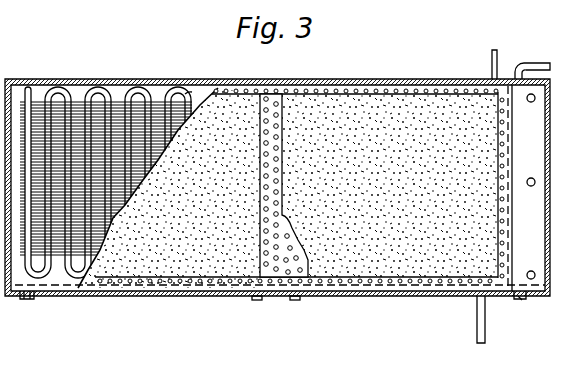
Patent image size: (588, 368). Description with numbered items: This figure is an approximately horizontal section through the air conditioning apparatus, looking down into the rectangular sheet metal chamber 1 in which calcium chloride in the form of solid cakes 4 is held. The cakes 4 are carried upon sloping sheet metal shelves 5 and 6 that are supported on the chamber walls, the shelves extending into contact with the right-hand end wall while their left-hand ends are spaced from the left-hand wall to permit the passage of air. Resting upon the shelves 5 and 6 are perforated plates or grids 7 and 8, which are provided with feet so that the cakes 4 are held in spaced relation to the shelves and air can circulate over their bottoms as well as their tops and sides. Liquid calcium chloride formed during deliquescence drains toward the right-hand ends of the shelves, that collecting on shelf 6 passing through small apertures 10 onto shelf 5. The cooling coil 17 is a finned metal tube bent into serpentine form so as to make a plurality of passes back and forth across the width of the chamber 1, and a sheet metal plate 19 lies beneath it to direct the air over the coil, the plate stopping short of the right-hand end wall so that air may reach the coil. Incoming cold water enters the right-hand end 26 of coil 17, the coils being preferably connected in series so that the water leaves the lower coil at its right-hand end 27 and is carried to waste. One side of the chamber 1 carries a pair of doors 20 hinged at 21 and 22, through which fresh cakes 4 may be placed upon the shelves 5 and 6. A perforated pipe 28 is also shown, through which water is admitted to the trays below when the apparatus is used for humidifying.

The chamber 1 is at (352, 82).
The cakes 4 is at (303, 110).
The shelf 5 is at (517, 298).
The shelf 6 is at (0, 80).
The perforated plate or grid 7 is at (423, 89).
The perforated plate or grid 8 is at (0, 62).
The apertures 10 is at (530, 102).
The cooling coil 17 is at (113, 100).
The plate 19 is at (161, 95).
The doors 20 is at (320, 298).
The hinge 21 is at (27, 300).
The hinge 22 is at (523, 301).
The right-hand end of coil 17 26 is at (492, 64).
The right-hand end of coil 16 27 is at (477, 324).
The perforated pipe 28 is at (519, 68).